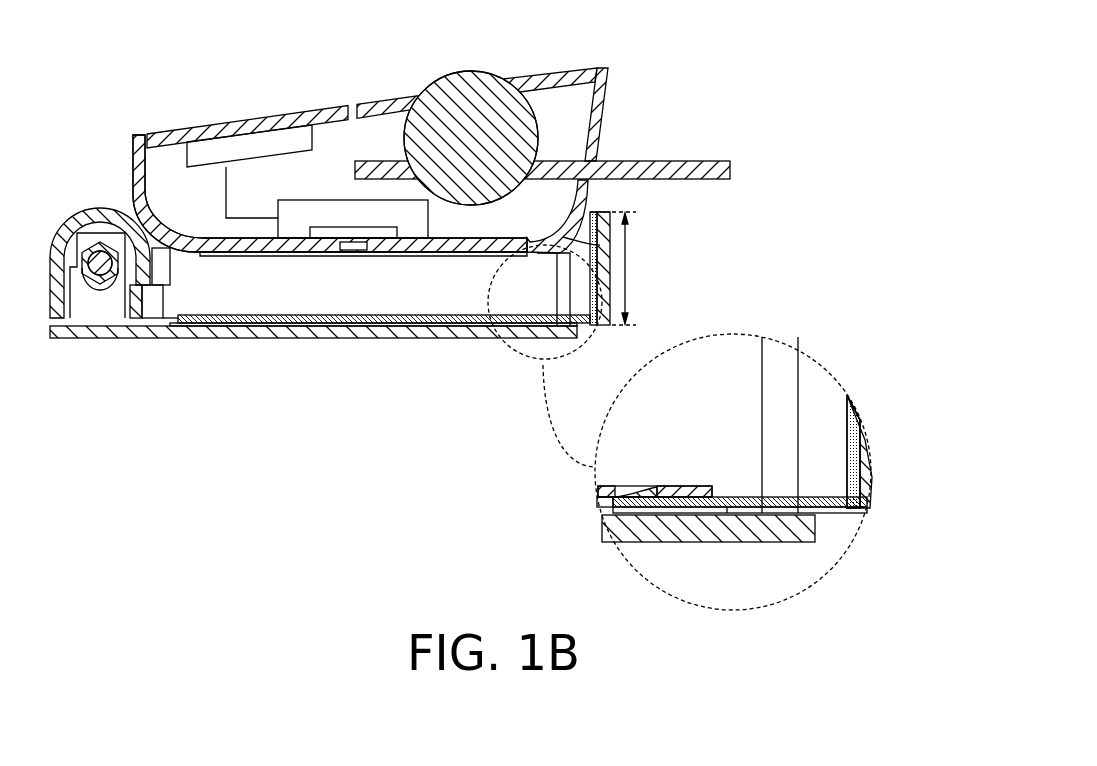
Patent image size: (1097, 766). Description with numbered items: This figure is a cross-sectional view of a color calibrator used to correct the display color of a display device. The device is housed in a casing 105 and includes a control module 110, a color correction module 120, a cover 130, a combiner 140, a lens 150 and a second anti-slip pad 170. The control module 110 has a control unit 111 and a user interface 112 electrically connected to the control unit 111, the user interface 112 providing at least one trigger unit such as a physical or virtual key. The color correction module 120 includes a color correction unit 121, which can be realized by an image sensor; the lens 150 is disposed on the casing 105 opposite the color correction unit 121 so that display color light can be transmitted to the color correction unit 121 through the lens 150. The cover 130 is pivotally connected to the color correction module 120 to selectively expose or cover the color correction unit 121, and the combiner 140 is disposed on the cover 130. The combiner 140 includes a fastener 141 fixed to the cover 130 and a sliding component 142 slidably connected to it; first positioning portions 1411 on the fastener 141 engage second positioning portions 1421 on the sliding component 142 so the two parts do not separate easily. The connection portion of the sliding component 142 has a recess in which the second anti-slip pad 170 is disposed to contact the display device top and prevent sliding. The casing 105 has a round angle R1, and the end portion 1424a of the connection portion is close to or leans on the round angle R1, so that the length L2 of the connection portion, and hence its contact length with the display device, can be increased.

The casing 105 is at (600, 97).
The control module 110 is at (330, 130).
The control unit 111 is at (262, 39).
The user interface 112 is at (250, 123).
The color correction module 120 is at (290, 208).
The color correction unit 121 is at (367, 233).
The cover 130 is at (225, 338).
The combiner 140 is at (417, 311).
The fastener 141 is at (690, 487).
The first positioning portion 1411 is at (622, 493).
The sliding component 142 is at (703, 505).
The second positioning portion 1421 is at (658, 493).
The end portion of the connection portion 1424a is at (596, 211).
The lens 150 is at (346, 256).
The second anti-slip pad 170 is at (857, 433).
The round angle R1 is at (563, 237).
The length of the connection portion L2 is at (628, 271).